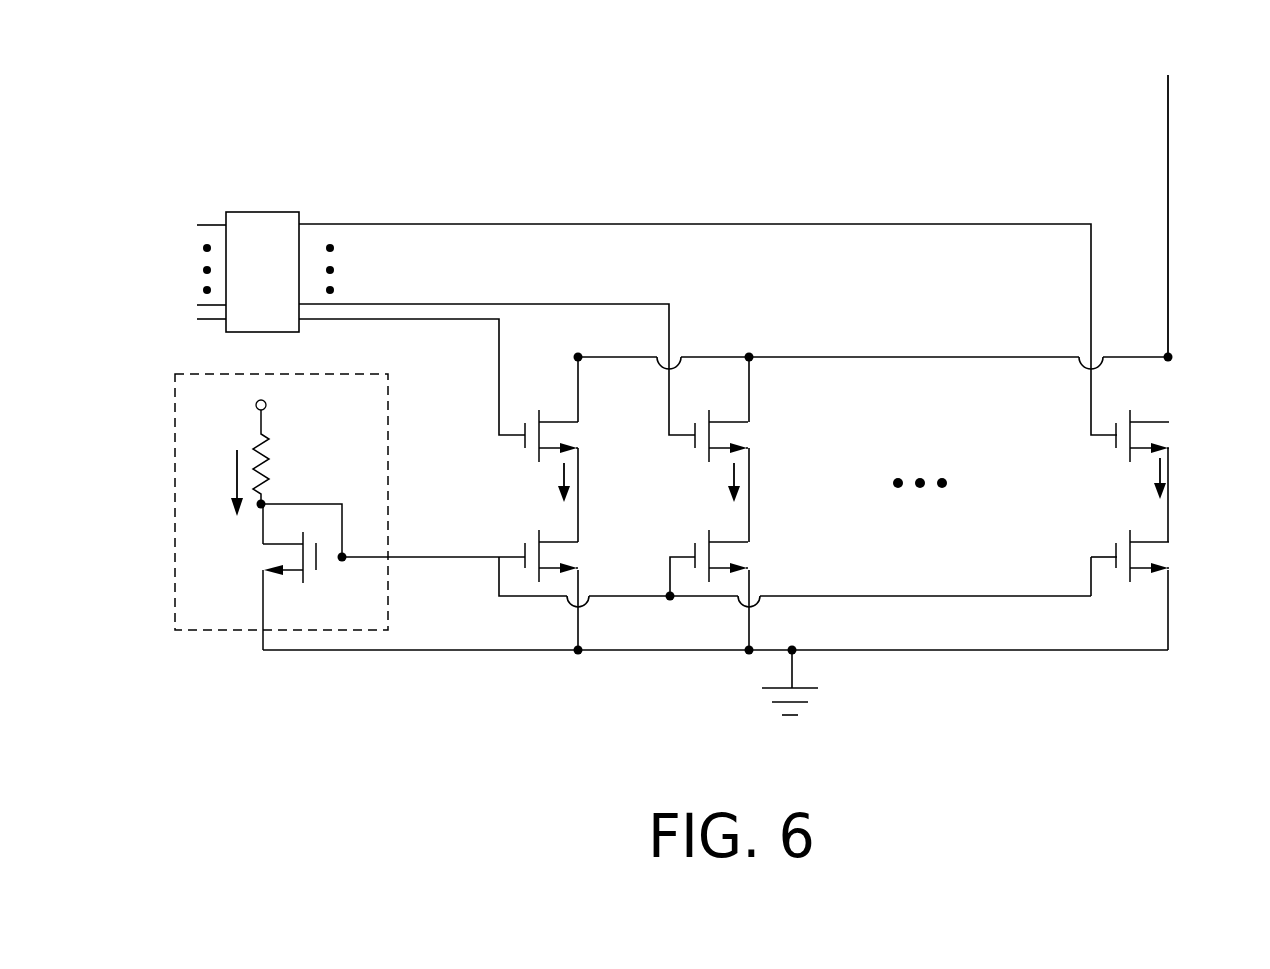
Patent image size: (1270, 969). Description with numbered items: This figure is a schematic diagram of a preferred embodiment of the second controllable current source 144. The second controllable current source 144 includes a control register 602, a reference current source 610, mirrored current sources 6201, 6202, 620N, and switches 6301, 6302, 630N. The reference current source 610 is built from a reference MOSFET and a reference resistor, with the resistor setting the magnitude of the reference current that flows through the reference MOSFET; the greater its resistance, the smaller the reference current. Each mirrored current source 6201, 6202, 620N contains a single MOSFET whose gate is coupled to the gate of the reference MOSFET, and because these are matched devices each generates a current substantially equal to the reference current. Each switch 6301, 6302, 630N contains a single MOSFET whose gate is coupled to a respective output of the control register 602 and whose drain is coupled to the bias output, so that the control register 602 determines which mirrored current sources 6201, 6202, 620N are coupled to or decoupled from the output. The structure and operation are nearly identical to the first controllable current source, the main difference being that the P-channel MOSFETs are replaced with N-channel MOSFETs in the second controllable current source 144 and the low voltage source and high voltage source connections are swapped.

The second controllable current source 144 is at (834, 58).
The control register 602 is at (276, 332).
The reference current source 610 is at (372, 601).
The mirrored current source 6201 is at (579, 524).
The mirrored current source 6202 is at (750, 524).
The mirrored current source 620N is at (1169, 520).
The switch 6301 is at (579, 404).
The switch 6302 is at (750, 404).
The switch 630N is at (1169, 399).